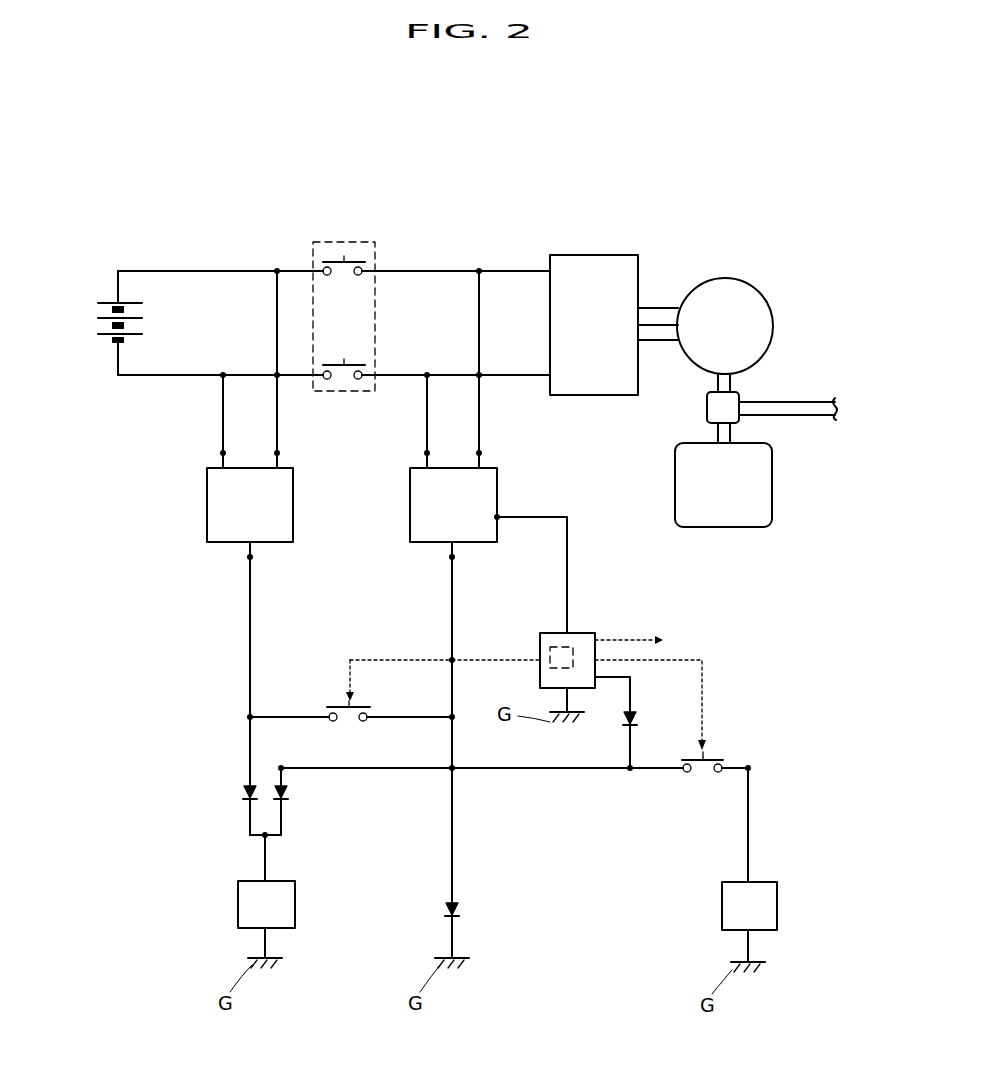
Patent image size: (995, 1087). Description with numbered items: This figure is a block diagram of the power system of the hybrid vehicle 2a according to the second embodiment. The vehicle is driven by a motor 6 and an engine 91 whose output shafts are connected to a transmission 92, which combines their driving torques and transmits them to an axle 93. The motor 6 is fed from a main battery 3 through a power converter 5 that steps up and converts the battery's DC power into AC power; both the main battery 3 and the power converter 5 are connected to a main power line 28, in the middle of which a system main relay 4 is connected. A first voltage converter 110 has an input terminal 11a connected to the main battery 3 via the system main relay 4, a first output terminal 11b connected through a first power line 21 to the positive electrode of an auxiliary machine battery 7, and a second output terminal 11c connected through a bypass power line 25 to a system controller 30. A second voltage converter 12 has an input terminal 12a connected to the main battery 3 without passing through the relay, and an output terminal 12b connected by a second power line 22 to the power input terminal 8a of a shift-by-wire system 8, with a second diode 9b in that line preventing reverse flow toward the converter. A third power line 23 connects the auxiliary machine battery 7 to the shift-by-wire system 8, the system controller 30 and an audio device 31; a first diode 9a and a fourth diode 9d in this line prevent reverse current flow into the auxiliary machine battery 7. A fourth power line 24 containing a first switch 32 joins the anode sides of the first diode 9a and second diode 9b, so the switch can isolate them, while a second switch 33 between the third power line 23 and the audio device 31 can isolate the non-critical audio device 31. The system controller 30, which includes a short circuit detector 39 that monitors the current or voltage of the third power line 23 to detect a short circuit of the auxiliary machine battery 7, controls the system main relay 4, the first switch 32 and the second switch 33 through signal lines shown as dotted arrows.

The hybrid vehicle 2a is at (94, 183).
The main battery 3 is at (105, 302).
The system main relay 4 is at (333, 393).
The power converter 5 is at (592, 255).
The motor 6 is at (725, 280).
The auxiliary machine battery 7 is at (465, 902).
The shift-by-wire system 8 is at (238, 902).
The power input terminal 8a is at (262, 836).
The first diode 9a is at (290, 790).
The second diode 9b is at (246, 785).
The fourth diode 9d is at (625, 722).
The input terminal 11a is at (479, 450).
The first output terminal 11b is at (450, 558).
The second output terminal 11c is at (500, 516).
The second voltage converter 12 is at (207, 508).
The input terminal 12a is at (276, 450).
The output terminal 12b is at (248, 558).
The first power line 21 is at (455, 593).
The second power line 22 is at (253, 593).
The third power line 23 is at (525, 772).
The fourth power line 24 is at (303, 715).
The bypass power line 25 is at (570, 528).
The main power line 28 is at (207, 383).
The system controller 30 is at (578, 633).
The audio device 31 is at (777, 905).
The first switch 32 is at (333, 704).
The second switch 33 is at (718, 755).
The short circuit detector 39 is at (551, 648).
The engine 91 is at (772, 470).
The transmission 92 is at (705, 405).
The axle 93 is at (800, 402).
The first voltage converter 110 is at (410, 508).